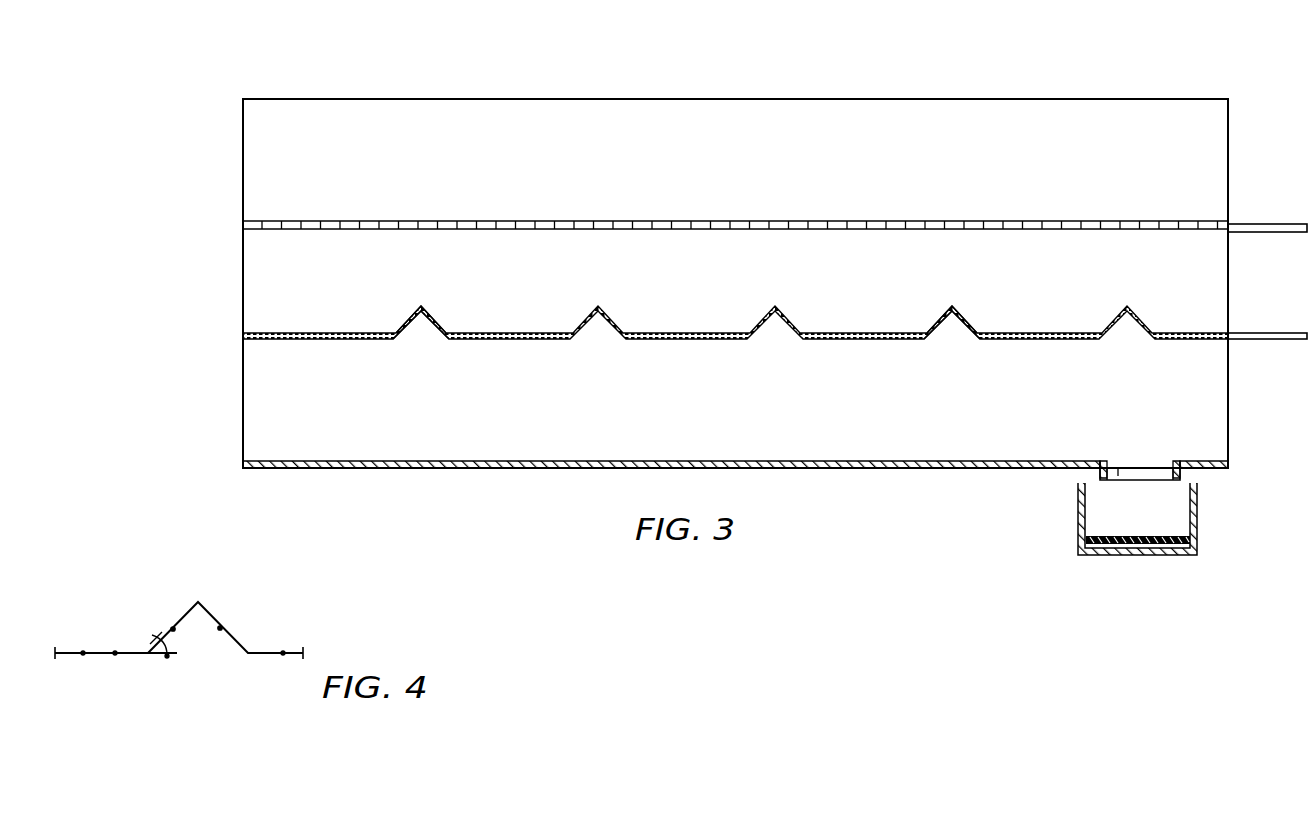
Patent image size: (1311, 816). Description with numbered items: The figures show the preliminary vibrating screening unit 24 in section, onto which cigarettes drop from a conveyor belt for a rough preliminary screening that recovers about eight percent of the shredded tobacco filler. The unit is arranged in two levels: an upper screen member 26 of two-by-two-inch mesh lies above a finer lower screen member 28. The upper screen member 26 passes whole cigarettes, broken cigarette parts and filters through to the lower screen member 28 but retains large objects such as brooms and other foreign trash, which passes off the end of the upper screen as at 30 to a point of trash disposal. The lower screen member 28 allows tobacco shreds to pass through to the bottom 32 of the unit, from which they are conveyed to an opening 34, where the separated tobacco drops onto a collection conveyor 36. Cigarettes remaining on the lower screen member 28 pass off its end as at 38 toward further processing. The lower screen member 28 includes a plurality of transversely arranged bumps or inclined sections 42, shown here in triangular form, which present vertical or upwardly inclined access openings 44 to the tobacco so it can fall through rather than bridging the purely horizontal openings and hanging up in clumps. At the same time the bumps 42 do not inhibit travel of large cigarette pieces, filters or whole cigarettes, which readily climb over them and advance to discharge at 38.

In FIG. 3, the preliminary vibrating screening unit 24 is at (898, 50).
In FIG. 3, the upper screen member 26 is at (891, 220).
In FIG. 3, the lower screen member 28 is at (877, 292).
In FIG. 3, the end of upper screen 30 is at (1296, 176).
In FIG. 3, the bottom 32 is at (944, 420).
In FIG. 3, the opening 34 is at (1118, 472).
In FIG. 3, the collection conveyor 36 is at (1197, 513).
In FIG. 3, the discharge end of lower screen 38 is at (1290, 292).
In FIG. 3, the bumps or inclined sections 42 is at (425, 311).
In FIG. 4, the bumps or inclined sections 42 is at (236, 590).
In FIG. 4, the access openings 44 is at (176, 628).